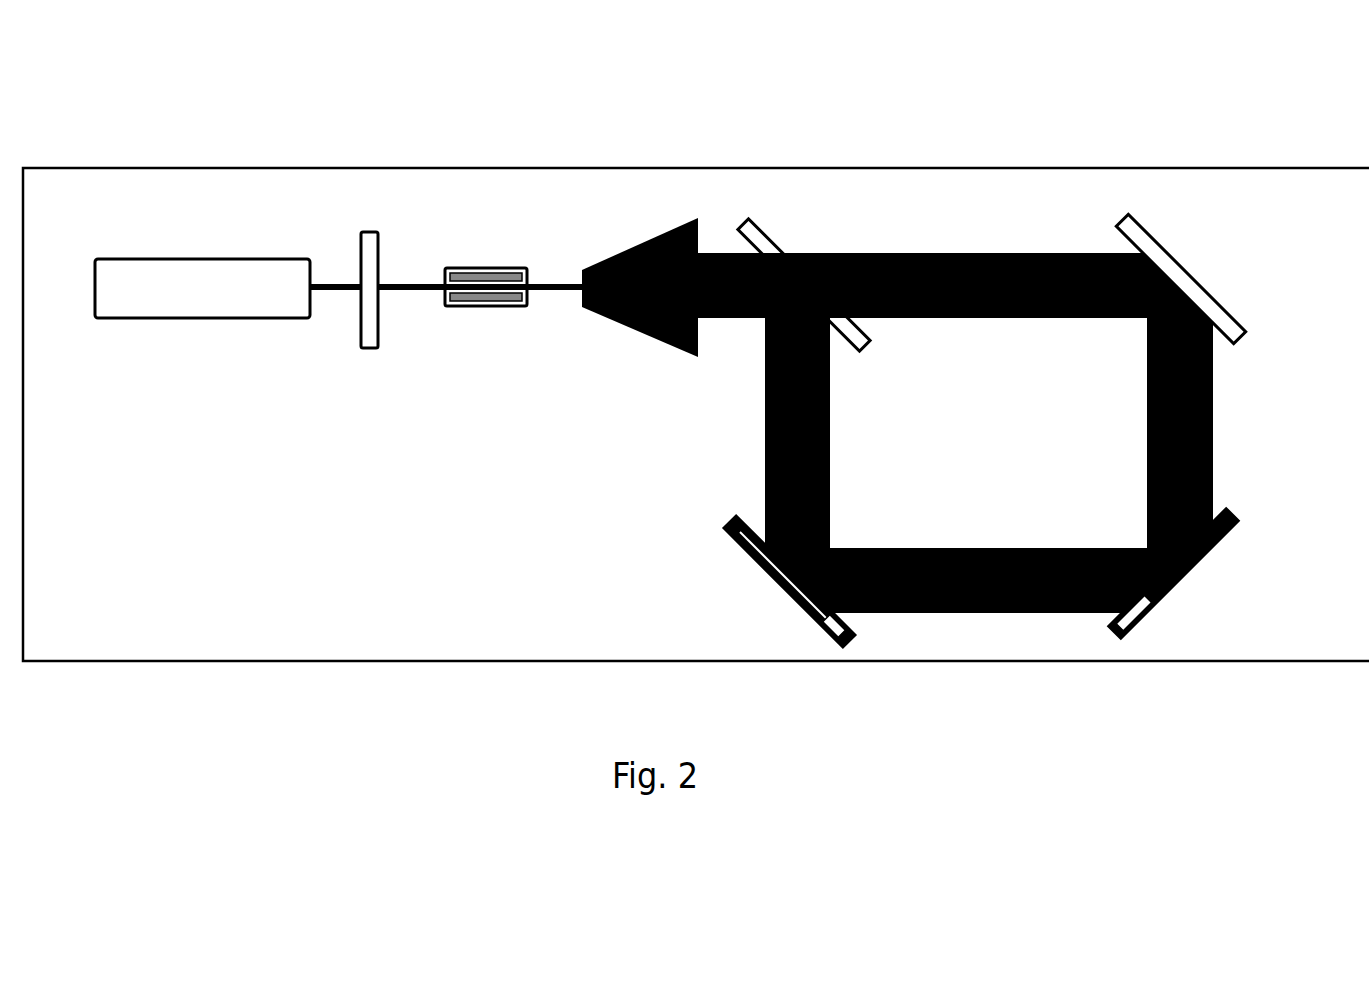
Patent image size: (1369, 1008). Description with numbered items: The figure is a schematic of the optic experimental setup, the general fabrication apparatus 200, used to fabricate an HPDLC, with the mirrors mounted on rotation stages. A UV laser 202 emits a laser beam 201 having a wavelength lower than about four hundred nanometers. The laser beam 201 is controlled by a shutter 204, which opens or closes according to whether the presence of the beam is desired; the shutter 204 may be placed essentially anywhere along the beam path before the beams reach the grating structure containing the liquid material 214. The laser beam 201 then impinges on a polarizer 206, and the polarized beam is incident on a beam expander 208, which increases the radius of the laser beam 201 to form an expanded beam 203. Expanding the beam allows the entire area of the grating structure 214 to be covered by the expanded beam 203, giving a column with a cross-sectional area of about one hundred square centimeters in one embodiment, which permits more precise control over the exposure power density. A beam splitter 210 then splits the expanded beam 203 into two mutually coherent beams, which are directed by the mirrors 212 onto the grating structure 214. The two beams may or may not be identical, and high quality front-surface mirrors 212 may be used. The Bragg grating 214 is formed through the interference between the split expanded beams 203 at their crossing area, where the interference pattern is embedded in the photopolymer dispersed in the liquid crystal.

The general fabrication apparatus 200 is at (377, 724).
The laser beam 201 is at (327, 297).
The UV laser 202 is at (200, 268).
The expanded beam 203 is at (823, 358).
The shutter 204 is at (368, 262).
The polarizer 206 is at (488, 280).
The beam expander 208 is at (663, 242).
The beam splitter 210 is at (910, 257).
The mirrors 212 is at (846, 600).
The grating structure 214 is at (1148, 612).